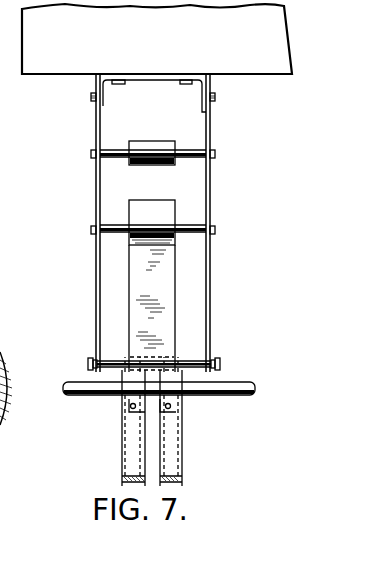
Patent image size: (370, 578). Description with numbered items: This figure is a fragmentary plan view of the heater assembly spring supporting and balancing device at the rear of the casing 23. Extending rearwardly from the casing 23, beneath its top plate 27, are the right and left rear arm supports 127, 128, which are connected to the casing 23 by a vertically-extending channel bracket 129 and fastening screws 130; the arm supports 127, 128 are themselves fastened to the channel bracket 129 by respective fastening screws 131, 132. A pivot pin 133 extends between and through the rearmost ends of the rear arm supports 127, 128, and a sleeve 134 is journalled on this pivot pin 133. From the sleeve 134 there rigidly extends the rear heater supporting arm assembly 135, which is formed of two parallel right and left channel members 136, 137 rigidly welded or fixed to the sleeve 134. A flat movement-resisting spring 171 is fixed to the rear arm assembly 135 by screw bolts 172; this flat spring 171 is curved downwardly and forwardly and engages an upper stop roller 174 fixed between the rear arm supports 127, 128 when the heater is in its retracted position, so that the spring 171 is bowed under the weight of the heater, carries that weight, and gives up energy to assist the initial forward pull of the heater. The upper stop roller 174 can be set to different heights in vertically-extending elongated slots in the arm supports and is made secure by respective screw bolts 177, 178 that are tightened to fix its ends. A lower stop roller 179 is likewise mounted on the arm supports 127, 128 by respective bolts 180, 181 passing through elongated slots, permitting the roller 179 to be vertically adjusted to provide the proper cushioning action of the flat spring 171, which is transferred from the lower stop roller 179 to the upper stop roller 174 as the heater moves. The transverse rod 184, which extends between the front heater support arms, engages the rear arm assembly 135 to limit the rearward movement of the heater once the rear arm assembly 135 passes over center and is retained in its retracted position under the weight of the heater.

The casing 23 is at (68, 80).
The top plate 27 is at (254, 55).
The right rear arm support 127 is at (96, 190).
The left rear arm support 128 is at (210, 200).
The channel bracket 129 is at (152, 81).
The fastening screws 130 is at (128, 89).
The fastening screw 131 is at (91, 97).
The fastening screw 132 is at (215, 97).
The pivot pin 133 is at (220, 364).
The sleeve 134 is at (186, 361).
The rear heater supporting arm assembly 135 is at (182, 427).
The right channel member 136 is at (130, 441).
The left channel member 137 is at (172, 458).
The flat movement-resisting spring 171 is at (168, 300).
The screw bolts 172 is at (166, 407).
The upper stop roller 174 is at (150, 225).
The screw bolt 177 is at (91, 231).
The screw bolt 178 is at (215, 230).
The lower stop roller 179 is at (160, 152).
The bolt 180 is at (91, 154).
The bolt 181 is at (215, 155).
The transverse rod 184 is at (218, 392).